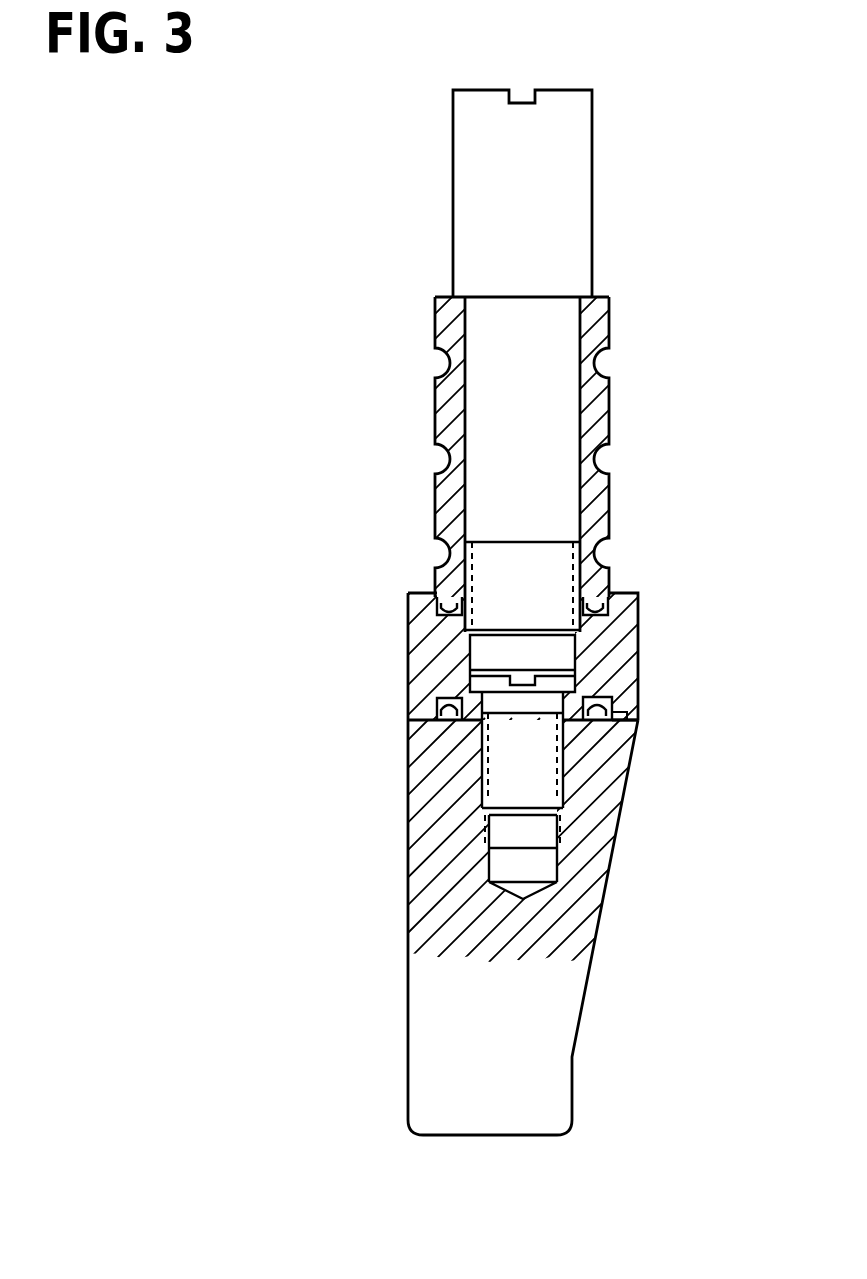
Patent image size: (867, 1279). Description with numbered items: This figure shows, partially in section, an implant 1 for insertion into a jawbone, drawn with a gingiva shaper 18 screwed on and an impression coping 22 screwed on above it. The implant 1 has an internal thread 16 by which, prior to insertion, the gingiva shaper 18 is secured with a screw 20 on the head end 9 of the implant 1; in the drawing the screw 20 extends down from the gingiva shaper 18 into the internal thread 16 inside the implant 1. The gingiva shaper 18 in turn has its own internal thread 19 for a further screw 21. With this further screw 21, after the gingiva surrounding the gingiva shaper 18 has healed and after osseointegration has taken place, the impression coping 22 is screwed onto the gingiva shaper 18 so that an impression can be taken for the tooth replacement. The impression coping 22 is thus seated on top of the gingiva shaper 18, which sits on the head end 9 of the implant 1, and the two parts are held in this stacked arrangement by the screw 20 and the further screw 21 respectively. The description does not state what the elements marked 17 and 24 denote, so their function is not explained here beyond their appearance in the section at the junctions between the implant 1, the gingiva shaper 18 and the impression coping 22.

The implant 1 is at (523, 988).
The head end 9 is at (639, 686).
The internal thread 16 is at (483, 827).
The sealing ring 17 is at (443, 598).
The gingiva shaper 18 is at (610, 643).
The internal thread 19 is at (465, 650).
The screw 20 is at (528, 758).
The further screw 21 is at (512, 556).
The impression coping 22 is at (593, 412).
The joint gap 24 is at (639, 716).